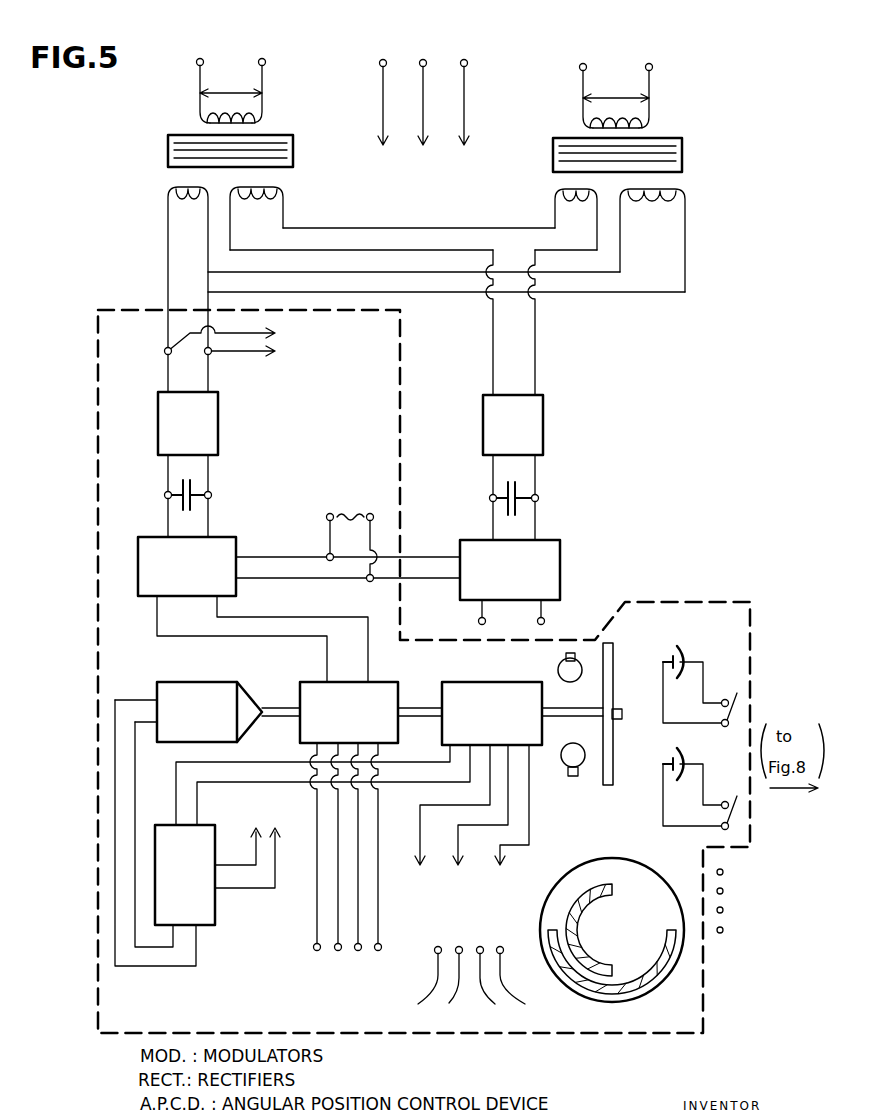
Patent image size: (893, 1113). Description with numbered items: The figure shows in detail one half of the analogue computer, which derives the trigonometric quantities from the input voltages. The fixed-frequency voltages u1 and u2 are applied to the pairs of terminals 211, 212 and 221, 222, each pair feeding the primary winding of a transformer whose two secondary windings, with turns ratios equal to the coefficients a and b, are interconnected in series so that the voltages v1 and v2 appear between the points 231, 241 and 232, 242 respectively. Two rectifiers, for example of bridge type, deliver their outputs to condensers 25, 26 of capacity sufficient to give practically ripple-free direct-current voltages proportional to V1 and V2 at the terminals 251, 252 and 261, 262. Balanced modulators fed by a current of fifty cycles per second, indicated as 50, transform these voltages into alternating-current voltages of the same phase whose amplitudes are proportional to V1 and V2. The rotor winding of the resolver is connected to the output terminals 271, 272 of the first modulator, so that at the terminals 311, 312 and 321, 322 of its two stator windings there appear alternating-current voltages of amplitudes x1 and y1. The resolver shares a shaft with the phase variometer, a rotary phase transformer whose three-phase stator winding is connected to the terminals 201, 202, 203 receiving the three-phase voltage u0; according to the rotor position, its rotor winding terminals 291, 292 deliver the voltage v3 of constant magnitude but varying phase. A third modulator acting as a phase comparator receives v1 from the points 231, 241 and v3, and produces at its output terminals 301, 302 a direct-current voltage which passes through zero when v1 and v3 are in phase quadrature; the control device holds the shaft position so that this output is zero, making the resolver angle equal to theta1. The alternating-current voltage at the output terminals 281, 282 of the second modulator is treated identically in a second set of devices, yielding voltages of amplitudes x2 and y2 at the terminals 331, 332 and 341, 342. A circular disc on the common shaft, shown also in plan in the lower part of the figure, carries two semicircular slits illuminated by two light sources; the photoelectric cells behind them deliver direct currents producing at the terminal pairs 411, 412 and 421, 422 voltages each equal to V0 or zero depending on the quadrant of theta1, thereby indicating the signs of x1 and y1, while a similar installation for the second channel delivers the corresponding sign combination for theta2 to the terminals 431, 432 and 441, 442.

The three-phase voltage terminal 201 is at (383, 59).
The three-phase voltage terminal 202 is at (423, 59).
The three-phase voltage terminal 203 is at (464, 59).
The input terminal for voltage u1 211 is at (197, 59).
The input terminal for voltage u1 212 is at (265, 59).
The input terminal for voltage u2 221 is at (580, 64).
The input terminal for voltage u2 222 is at (652, 64).
The output point for voltage v1 231 is at (166, 353).
The output point for voltage v1 241 is at (211, 353).
The output point for voltage v2 232 is at (492, 357).
The output point for voltage v2 242 is at (537, 357).
The condenser 25 is at (190, 482).
The condenser terminal 251 is at (166, 493).
The condenser terminal 252 is at (211, 496).
The condenser 26 is at (517, 485).
The condenser terminal 261 is at (491, 497).
The condenser terminal 262 is at (538, 499).
The modulator output terminal 271 is at (156, 613).
The modulator output terminal 272 is at (218, 605).
The modulator output terminal 281 is at (480, 629).
The modulator output terminal 282 is at (586, 629).
The rotor winding terminal of VP 291 is at (176, 787).
The rotor winding terminal of VP 292 is at (197, 808).
The output terminal of Md3 301 is at (173, 966).
The output terminal of Md3 302 is at (196, 958).
The resolver stator output terminal 311 is at (316, 951).
The resolver stator output terminal 312 is at (337, 951).
The resolver stator output terminal 321 is at (359, 951).
The resolver stator output terminal 322 is at (379, 951).
The output terminal for x2 331 is at (415, 991).
The output terminal for x2 332 is at (452, 991).
The output terminal for y2 341 is at (497, 991).
The output terminal for y2 342 is at (530, 991).
The photoelectric cell output terminal 411 is at (725, 699).
The photoelectric cell output terminal 412 is at (739, 704).
The photoelectric cell output terminal 421 is at (725, 801).
The photoelectric cell output terminal 422 is at (739, 807).
The sign-signal terminal 431 is at (746, 879).
The sign-signal terminal 432 is at (746, 898).
The sign-signal terminal 441 is at (746, 917).
The sign-signal terminal 442 is at (746, 937).
The 50 c./s. supply current 50 is at (374, 510).